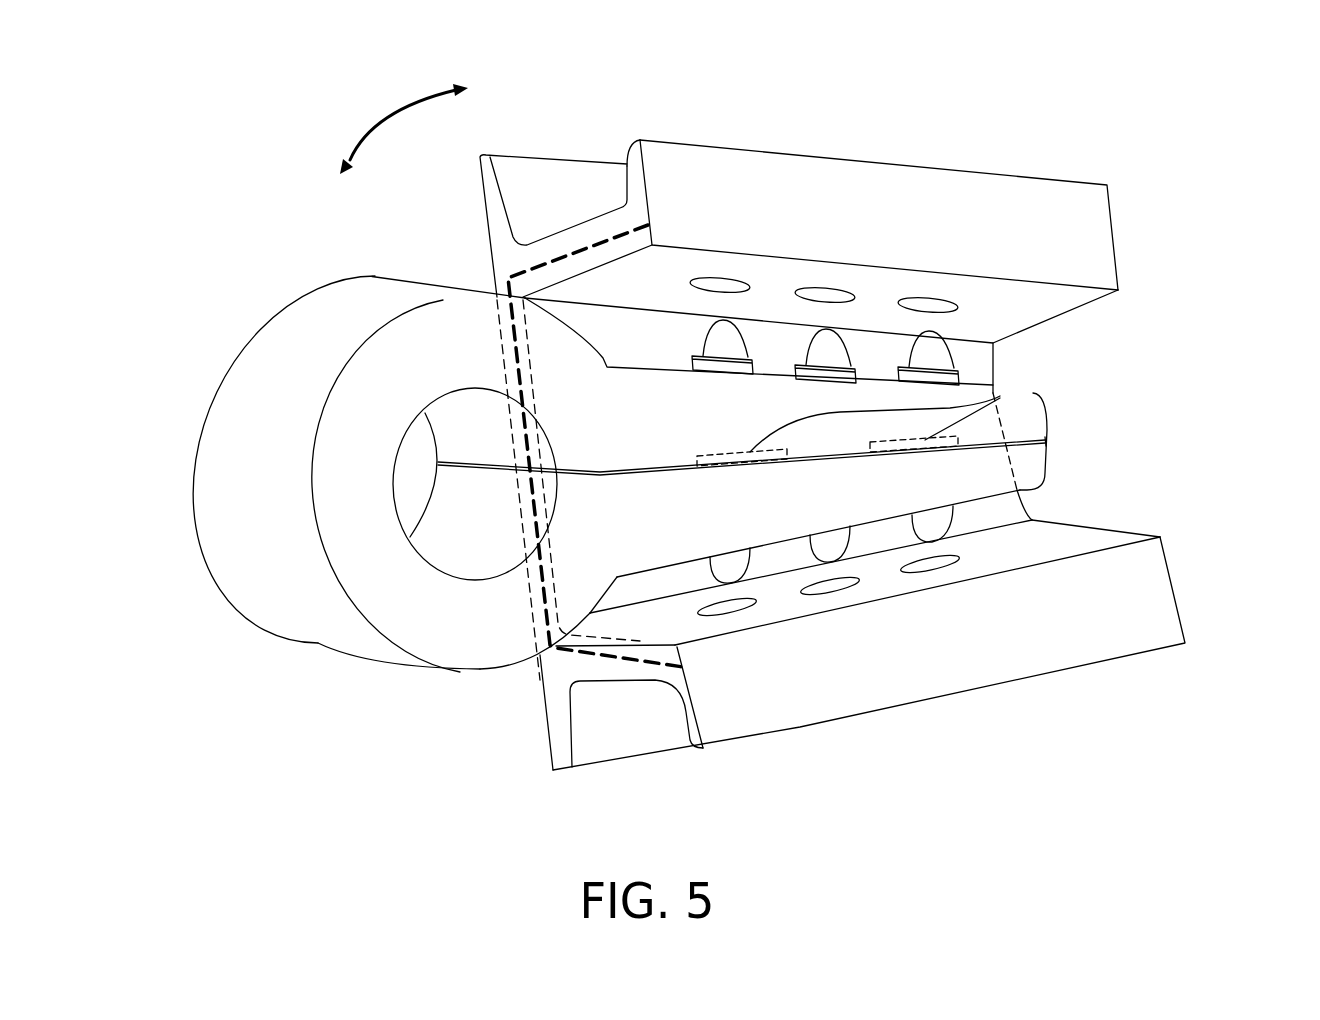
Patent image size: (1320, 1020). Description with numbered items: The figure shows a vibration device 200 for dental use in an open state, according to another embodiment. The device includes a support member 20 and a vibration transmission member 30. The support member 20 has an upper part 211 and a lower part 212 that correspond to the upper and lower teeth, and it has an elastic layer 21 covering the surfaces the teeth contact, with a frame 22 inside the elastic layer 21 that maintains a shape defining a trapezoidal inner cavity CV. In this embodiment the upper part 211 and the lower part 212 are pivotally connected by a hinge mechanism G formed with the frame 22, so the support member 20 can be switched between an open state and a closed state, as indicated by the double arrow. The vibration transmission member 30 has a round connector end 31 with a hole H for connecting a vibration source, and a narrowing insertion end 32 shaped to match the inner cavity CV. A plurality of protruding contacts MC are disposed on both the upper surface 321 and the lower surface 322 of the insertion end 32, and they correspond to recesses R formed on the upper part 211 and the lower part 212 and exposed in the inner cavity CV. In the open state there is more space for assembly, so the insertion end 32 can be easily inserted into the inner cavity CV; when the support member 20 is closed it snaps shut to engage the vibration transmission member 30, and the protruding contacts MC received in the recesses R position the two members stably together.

The vibration device 200 is at (108, 62).
The support member 20 is at (1073, 126).
The elastic layer 21 is at (970, 166).
The upper part 211 is at (678, 172).
The lower part 212 is at (735, 717).
The frame 22 is at (512, 272).
The vibration transmission member 30 is at (214, 328).
The connector end 31 is at (203, 486).
The insertion end 32 is at (973, 475).
The upper surface 321 is at (637, 367).
The lower surface 322 is at (637, 578).
The protruding contacts MC is at (927, 348).
The recesses R is at (930, 566).
The hinge mechanism G is at (993, 392).
The inner cavity CV is at (1133, 488).
The hole H is at (450, 540).